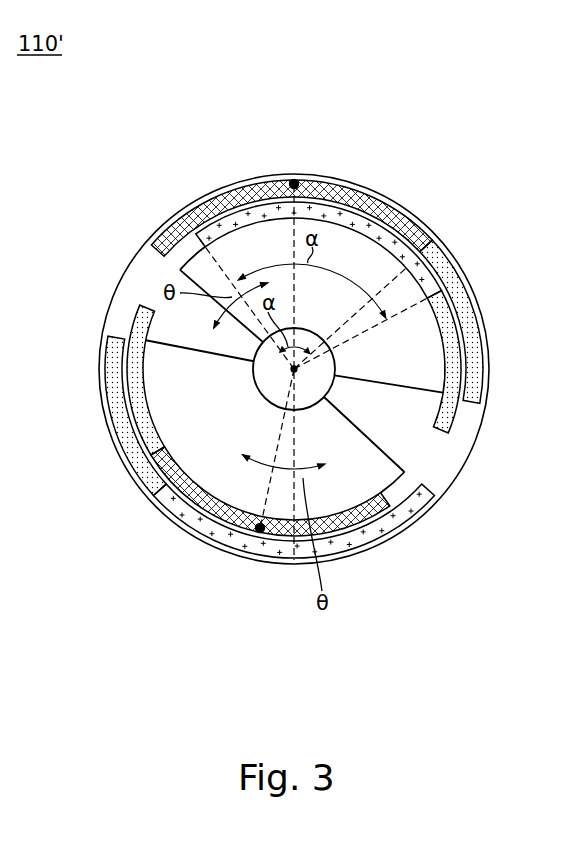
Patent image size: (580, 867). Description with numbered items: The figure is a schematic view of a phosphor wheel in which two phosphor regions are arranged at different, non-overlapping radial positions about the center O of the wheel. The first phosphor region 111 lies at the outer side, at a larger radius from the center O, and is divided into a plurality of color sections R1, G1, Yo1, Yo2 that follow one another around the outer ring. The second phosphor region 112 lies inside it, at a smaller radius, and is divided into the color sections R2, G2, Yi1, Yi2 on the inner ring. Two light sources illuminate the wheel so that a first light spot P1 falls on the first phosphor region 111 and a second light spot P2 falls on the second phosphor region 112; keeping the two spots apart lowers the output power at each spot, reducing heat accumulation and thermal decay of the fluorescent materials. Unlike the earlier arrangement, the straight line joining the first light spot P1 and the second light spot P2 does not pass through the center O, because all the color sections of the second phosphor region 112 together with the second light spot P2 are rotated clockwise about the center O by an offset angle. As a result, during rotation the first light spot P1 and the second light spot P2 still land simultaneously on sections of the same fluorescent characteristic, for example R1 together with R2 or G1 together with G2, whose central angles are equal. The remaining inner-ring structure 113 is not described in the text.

The first phosphor region 111 is at (376, 195).
The second phosphor region 112 is at (286, 367).
The inner ring (second electrode layer) 113 is at (281, 378).
The color section R1 is at (226, 202).
The color section R2 is at (241, 520).
The color section G1 is at (208, 530).
The color section G2 is at (268, 210).
The first light spot P1 is at (294, 180).
The second light spot P2 is at (261, 533).
The color section Yo1 is at (473, 323).
The color section Yi1 is at (455, 348).
The color section Yo2 is at (110, 378).
The color section Yi2 is at (138, 413).
The center O is at (294, 369).